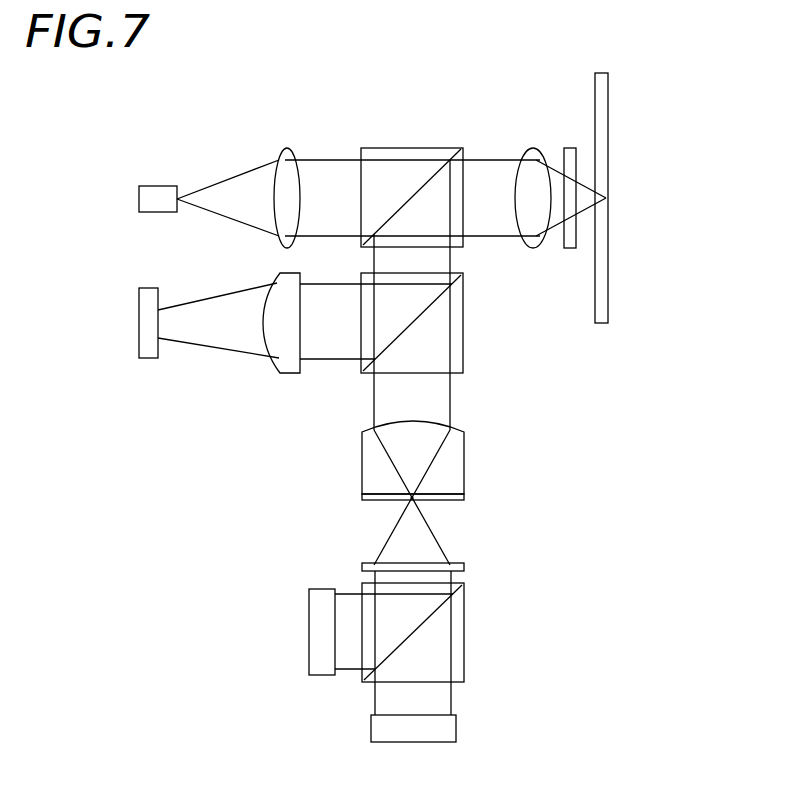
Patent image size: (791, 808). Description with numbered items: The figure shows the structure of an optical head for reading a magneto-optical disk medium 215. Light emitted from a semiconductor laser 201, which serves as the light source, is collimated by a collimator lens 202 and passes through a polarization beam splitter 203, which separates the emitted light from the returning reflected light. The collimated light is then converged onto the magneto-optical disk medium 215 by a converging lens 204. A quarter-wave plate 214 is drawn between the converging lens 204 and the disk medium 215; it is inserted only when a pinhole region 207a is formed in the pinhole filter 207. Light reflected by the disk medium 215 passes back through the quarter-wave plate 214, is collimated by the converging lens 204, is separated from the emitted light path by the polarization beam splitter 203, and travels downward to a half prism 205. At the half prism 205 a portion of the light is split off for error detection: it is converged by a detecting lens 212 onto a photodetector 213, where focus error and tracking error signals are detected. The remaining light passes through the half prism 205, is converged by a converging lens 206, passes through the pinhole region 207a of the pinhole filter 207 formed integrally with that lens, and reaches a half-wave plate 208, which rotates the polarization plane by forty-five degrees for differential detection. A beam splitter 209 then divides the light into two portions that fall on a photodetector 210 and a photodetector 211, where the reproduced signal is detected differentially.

The semiconductor laser 201 is at (150, 186).
The collimator lens 202 is at (287, 150).
The polarization beam splitter 203 is at (418, 148).
The converging lens 204 is at (530, 150).
The half prism 205 is at (463, 323).
The converging lens 206 is at (460, 440).
The pinhole filter 207 is at (464, 497).
The pinhole region 207a is at (398, 507).
The half-wave plate 208 is at (464, 567).
The beam splitter 209 is at (464, 632).
The photodetector 210 is at (456, 725).
The photodetector 211 is at (309, 627).
The detecting lens 212 is at (290, 370).
The photodetector 213 is at (151, 358).
The quarter-wave plate 214 is at (572, 148).
The magneto-optical disk medium 215 is at (603, 78).